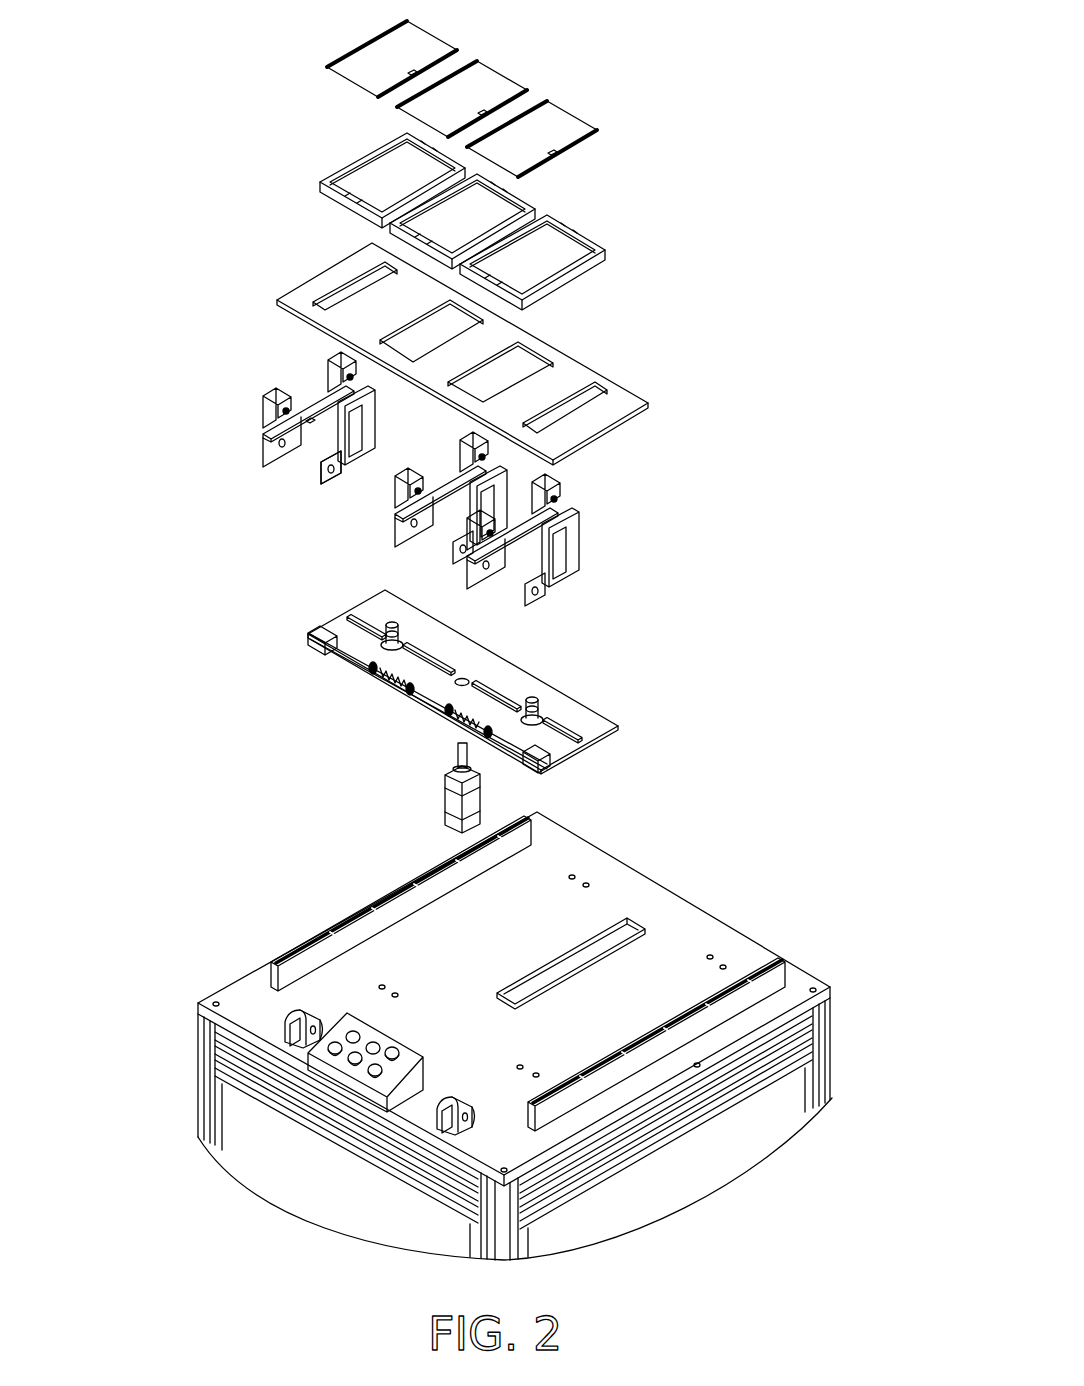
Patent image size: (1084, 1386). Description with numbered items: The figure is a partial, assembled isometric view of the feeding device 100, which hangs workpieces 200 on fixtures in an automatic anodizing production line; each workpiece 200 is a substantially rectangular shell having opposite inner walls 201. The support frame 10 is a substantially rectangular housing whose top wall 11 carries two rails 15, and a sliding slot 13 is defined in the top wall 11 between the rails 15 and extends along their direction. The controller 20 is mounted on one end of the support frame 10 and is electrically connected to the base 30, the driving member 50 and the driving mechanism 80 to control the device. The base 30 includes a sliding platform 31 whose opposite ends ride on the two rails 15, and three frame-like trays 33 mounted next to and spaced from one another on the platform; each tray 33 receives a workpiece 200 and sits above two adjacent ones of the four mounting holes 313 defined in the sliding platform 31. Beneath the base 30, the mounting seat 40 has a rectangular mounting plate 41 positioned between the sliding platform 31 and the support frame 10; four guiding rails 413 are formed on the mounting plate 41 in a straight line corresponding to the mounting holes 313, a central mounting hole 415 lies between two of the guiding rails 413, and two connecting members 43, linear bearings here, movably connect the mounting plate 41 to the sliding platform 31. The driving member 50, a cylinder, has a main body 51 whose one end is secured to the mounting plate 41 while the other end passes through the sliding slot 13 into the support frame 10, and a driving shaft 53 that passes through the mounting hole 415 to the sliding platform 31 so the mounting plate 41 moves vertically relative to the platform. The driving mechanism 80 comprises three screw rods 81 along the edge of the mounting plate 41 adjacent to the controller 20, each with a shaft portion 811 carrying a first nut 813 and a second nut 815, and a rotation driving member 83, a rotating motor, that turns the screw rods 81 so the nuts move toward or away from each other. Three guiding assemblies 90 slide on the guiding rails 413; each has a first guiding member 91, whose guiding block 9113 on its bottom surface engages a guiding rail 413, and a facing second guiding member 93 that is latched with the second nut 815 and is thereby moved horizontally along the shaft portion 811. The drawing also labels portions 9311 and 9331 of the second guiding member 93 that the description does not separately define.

The feeding device 100 is at (752, 71).
The workpiece 200 is at (428, 45).
The inner walls 201 is at (370, 45).
The support frame 10 is at (715, 935).
The top wall 11 is at (260, 1005).
The sliding slot 13 is at (620, 930).
The rails 15 is at (770, 985).
The controller 20 is at (340, 1078).
The base 30 is at (728, 262).
The sliding platform 31 is at (580, 367).
The mounting holes 313 is at (612, 383).
The trays 33 is at (597, 263).
The mounting seat 40 is at (688, 660).
The mounting plate 41 is at (598, 724).
The guiding rails 413 is at (368, 618).
The mounting hole 415 is at (468, 680).
The connecting members 43 is at (540, 706).
The driving member 50 is at (343, 808).
The main body 51 is at (450, 825).
The driving shaft 53 is at (455, 772).
The driving mechanism 80 is at (267, 780).
The screw rod 81 is at (334, 798).
The shaft portion 811 is at (425, 708).
The first nut 813 is at (405, 695).
The second nut 815 is at (440, 717).
The rotation driving member 83 is at (318, 652).
The guiding assembly 90 is at (192, 378).
The first guiding member 91 is at (273, 405).
The guiding block 9113 is at (310, 423).
The second guiding member 93 is at (340, 460).
The slot 9311 is at (575, 580).
The mounting tab 9331 is at (340, 490).